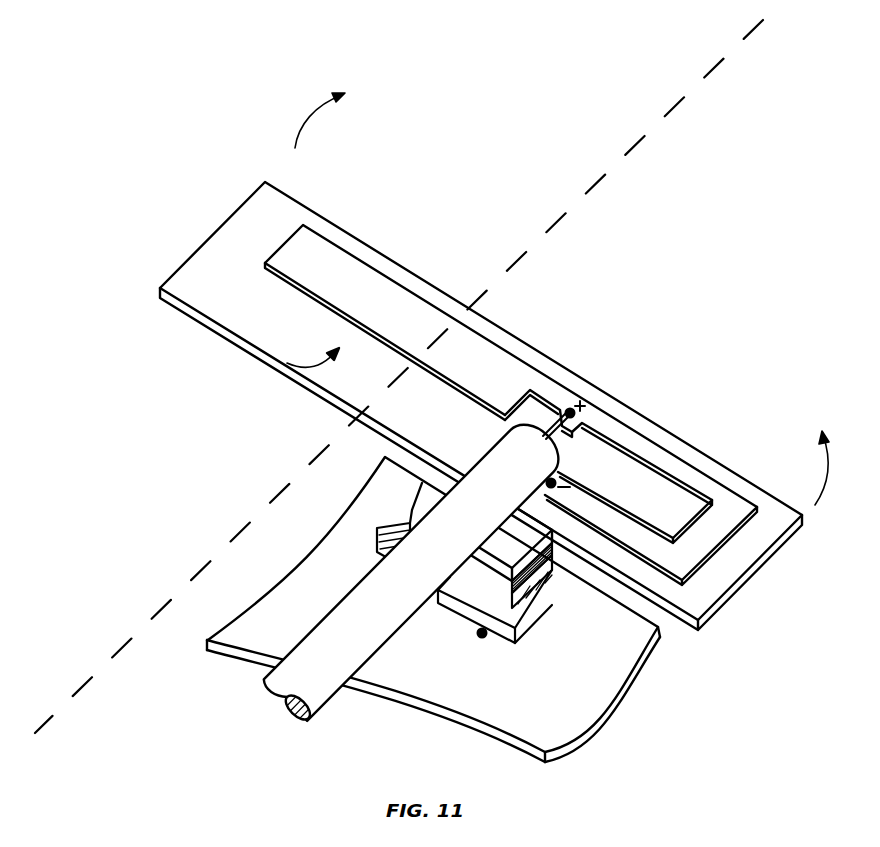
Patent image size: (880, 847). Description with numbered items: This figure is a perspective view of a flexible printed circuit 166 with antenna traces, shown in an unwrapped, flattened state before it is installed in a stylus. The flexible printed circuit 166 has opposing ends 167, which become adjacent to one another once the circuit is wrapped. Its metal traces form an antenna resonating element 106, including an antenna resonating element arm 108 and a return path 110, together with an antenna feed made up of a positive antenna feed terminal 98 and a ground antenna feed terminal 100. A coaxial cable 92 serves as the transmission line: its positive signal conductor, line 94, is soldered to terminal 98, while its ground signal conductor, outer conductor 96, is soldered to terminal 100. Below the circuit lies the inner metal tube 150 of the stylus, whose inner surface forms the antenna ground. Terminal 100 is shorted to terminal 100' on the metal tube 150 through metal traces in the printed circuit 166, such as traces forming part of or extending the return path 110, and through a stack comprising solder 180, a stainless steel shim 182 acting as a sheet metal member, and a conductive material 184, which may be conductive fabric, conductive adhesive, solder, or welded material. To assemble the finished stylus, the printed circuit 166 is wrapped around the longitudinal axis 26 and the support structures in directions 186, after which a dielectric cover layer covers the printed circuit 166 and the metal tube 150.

The longitudinal axis 26 is at (715, 70).
The coaxial cable 92 is at (383, 642).
The line 94 is at (563, 440).
The outer conductor 96 is at (507, 509).
The positive antenna feed terminal 98 is at (570, 409).
The ground antenna feed terminal 100 is at (598, 478).
The terminal 100' is at (490, 663).
The antenna resonating element 106 is at (285, 363).
The antenna resonating element arm 108 is at (500, 357).
The return path 110 is at (712, 535).
The metal tube 150 is at (603, 705).
The flexible printed circuit 166 is at (625, 402).
The opposing ends 167 is at (253, 204).
The solder 180 is at (540, 574).
The stainless steel shim 182 is at (523, 610).
The conductive material 184 is at (453, 598).
The directions 186 is at (308, 124).